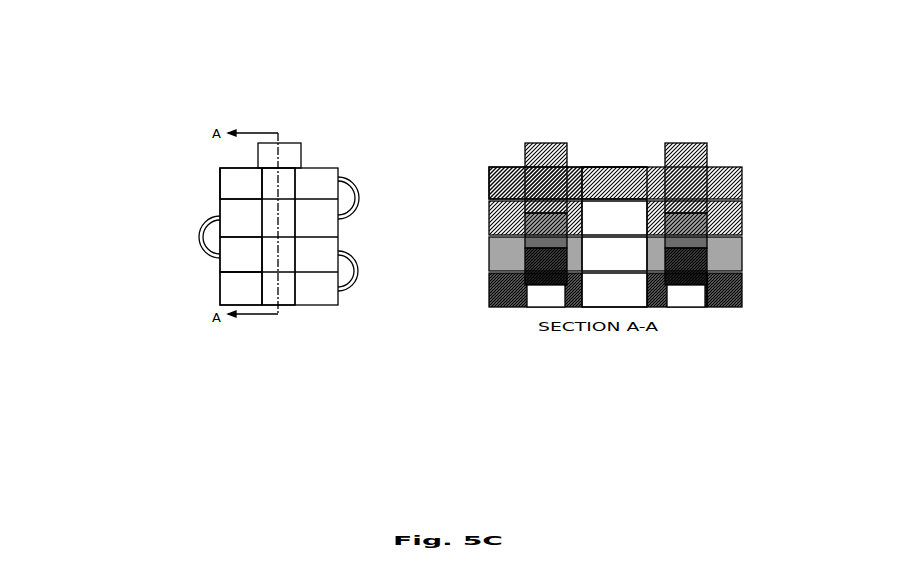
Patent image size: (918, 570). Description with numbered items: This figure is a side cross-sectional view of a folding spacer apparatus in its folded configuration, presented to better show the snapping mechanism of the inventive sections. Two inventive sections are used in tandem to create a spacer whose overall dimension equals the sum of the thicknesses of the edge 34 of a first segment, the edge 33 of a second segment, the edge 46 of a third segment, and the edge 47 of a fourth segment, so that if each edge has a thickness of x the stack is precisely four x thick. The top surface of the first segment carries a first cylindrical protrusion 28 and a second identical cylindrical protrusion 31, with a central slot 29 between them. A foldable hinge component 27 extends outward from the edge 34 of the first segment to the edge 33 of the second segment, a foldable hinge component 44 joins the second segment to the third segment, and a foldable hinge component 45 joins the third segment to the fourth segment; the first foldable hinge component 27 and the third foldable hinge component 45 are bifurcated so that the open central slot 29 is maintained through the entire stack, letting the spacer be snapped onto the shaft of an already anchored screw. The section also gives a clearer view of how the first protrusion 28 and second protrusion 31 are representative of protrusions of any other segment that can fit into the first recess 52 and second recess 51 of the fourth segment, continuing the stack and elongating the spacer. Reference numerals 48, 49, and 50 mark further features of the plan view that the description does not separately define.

The foldable hinge component 27 is at (352, 183).
The first cylindrical protrusion 28 is at (290, 146).
The central slot 29 is at (607, 183).
The second cylindrical protrusion 31 is at (705, 140).
The edge of second segment 33 is at (312, 195).
The edge of first segment 34 is at (240, 182).
The foldable hinge component 44 is at (203, 212).
The foldable hinge component 45 is at (348, 288).
The edge of third segment 46 is at (250, 252).
The edge of fourth segment 47 is at (238, 291).
The protrusion 48 is at (202, 240).
The protrusion 49 is at (362, 197).
The protrusion 50 is at (360, 265).
The second recess 51 is at (682, 298).
The first recess 52 is at (538, 297).